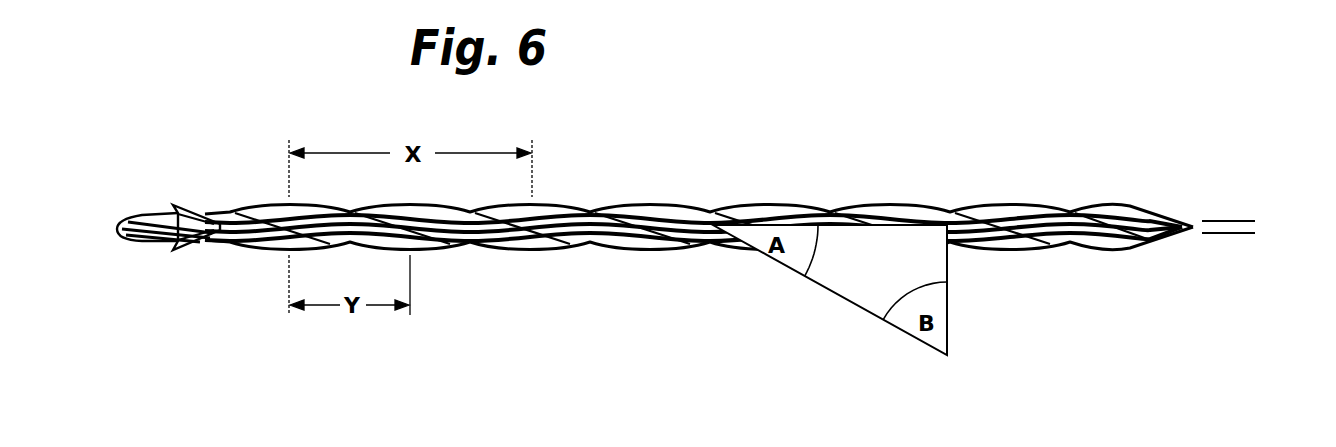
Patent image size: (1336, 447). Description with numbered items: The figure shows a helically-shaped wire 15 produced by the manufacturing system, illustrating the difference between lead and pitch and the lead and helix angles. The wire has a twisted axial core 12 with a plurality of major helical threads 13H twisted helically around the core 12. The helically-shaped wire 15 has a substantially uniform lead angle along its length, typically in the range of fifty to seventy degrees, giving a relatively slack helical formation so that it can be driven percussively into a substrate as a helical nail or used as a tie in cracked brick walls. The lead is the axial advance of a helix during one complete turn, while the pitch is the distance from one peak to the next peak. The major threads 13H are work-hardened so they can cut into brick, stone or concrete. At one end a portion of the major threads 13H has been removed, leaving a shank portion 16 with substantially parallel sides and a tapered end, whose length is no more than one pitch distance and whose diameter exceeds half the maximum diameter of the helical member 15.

The twisted axial core 12 is at (1247, 231).
The major helical threads 13H is at (663, 193).
The helically-shaped wire 15 is at (203, 195).
The shank portion 16 is at (142, 248).